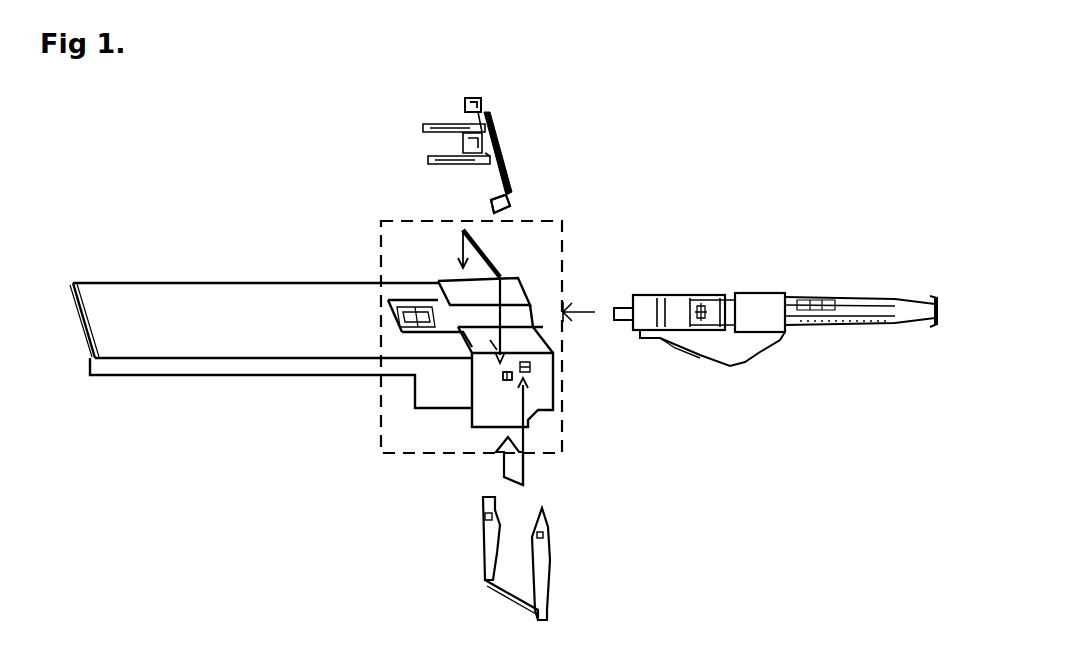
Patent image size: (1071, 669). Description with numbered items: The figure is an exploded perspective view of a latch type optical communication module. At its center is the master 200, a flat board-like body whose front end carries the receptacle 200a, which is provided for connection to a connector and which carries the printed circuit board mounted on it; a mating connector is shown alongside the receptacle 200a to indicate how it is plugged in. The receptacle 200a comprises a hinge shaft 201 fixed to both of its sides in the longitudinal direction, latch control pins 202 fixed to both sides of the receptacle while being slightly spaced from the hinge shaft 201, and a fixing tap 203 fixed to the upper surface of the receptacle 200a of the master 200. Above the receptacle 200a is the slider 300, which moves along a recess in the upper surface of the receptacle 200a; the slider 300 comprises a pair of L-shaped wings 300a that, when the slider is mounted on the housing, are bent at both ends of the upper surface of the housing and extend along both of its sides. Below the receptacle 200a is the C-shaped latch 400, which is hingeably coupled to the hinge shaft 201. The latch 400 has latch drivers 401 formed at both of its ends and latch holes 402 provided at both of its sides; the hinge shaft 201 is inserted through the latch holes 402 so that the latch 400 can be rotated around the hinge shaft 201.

The master 200 is at (323, 318).
The receptacle 200a is at (567, 255).
The hinge shaft 201 is at (545, 373).
The latch control pin 202 is at (497, 382).
The fixing tap 203 is at (408, 313).
The slider 300 is at (508, 138).
The L-shaped wing 300a is at (483, 100).
The C-shaped latch 400 is at (504, 558).
The latch driver 401 is at (483, 507).
The latch hole 402 is at (545, 532).